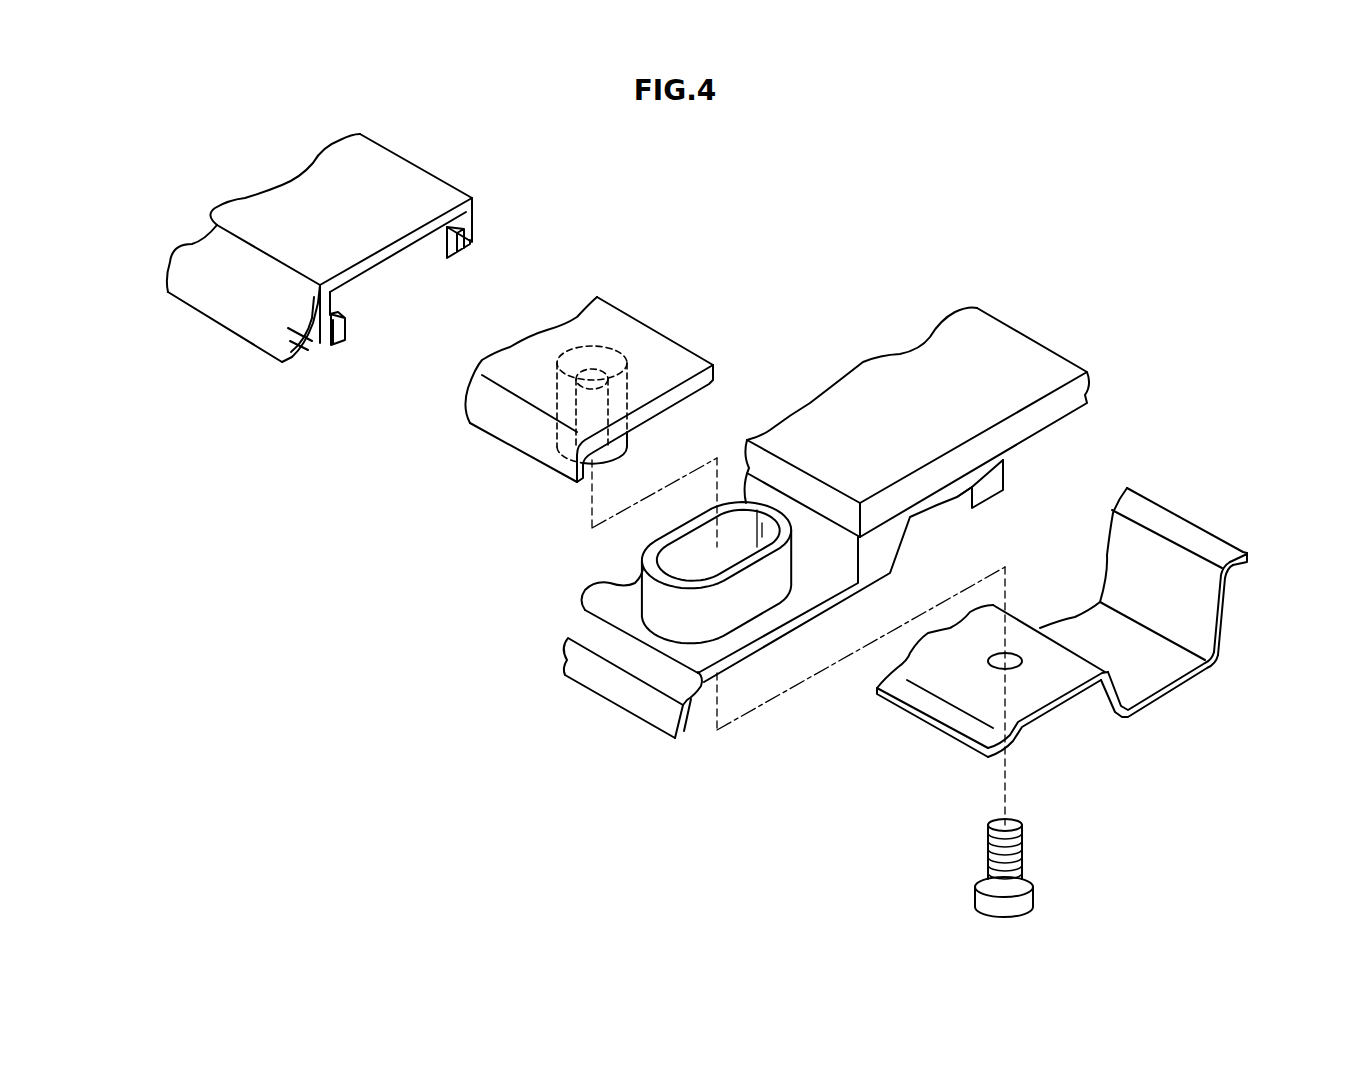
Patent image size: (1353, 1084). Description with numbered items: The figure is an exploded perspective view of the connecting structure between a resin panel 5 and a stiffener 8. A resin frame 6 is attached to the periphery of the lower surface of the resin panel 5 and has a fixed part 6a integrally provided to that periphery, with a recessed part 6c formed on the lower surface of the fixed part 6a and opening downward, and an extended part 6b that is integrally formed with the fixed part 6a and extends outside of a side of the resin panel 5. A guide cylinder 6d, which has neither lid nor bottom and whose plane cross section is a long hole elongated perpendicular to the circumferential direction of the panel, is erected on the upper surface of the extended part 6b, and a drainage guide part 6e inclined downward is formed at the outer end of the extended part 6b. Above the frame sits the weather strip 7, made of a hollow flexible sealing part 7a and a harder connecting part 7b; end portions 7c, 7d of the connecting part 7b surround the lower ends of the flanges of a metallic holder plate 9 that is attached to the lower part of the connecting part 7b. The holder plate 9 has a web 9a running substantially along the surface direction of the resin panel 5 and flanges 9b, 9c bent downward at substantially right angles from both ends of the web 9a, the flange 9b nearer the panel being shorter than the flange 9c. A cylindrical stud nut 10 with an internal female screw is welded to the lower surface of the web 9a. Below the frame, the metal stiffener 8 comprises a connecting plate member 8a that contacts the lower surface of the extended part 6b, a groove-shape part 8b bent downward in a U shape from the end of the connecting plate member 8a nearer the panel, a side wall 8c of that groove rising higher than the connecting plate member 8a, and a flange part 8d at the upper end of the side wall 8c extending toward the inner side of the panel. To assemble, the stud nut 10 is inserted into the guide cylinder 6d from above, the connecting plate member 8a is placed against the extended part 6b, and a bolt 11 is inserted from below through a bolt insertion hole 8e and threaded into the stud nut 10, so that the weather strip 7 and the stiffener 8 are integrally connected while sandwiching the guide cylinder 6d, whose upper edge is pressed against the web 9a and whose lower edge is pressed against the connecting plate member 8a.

The resin panel 5 is at (1012, 348).
The resin frame 6 is at (816, 604).
The fixed part 6a is at (993, 481).
The extended part 6b is at (805, 583).
The recessed part 6c is at (937, 508).
The guide cylinder 6d is at (657, 603).
The drainage guide part 6e is at (625, 688).
The weather strip 7 is at (323, 272).
The sealing part 7a is at (197, 252).
The connecting part 7b is at (297, 200).
The end portion 7c is at (467, 224).
The end portion 7d is at (330, 344).
The metal stiffener 8 is at (1088, 650).
The connecting plate member 8a is at (1050, 683).
The groove-shape part 8b is at (1170, 692).
The side wall 8c is at (1220, 617).
The flange part 8d is at (1243, 560).
The bolt insertion hole 8e is at (1020, 658).
The holder plate 9 is at (603, 376).
The web 9a is at (527, 352).
The flange 9b is at (712, 380).
The flange 9c is at (517, 425).
The stud nut 10 is at (620, 430).
The bolt 11 is at (1017, 853).